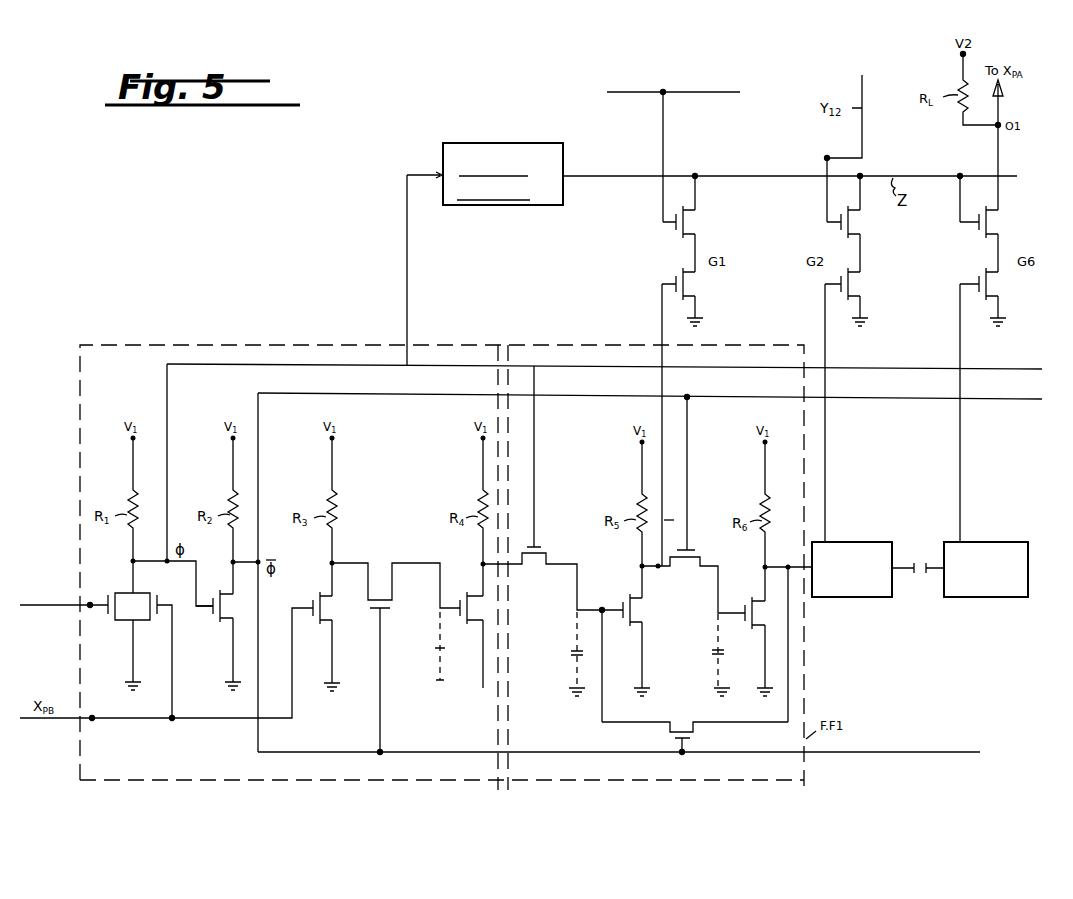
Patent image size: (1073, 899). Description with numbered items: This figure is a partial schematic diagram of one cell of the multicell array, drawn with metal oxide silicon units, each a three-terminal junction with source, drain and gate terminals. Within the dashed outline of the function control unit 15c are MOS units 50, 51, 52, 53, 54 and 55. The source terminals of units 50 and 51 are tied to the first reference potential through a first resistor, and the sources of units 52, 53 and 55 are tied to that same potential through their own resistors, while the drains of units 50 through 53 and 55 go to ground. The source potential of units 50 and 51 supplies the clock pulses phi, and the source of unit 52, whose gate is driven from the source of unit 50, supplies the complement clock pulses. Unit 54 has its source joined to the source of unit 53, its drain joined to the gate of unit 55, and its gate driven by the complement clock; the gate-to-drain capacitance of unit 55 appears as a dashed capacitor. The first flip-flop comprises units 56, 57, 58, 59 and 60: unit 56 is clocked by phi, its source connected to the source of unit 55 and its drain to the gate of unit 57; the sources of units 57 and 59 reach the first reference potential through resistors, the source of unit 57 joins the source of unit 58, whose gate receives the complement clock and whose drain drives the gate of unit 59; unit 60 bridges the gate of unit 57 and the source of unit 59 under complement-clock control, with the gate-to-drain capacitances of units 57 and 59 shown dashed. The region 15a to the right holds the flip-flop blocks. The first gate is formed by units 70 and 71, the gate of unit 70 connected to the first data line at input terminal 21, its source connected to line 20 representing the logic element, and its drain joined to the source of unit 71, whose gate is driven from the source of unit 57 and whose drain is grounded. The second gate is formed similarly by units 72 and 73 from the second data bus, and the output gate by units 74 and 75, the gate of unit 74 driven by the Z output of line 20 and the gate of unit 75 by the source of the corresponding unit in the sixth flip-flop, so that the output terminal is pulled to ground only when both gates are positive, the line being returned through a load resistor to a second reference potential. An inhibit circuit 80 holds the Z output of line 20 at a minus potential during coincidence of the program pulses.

The line 20 is at (746, 176).
The input terminal 21 is at (663, 92).
The MOS unit 50 is at (145, 608).
The MOS unit 51 is at (120, 610).
The MOS unit 52 is at (226, 611).
The MOS unit 53 is at (333, 612).
The MOS unit 54 is at (378, 580).
The MOS unit 55 is at (497, 612).
The MOS unit 56 is at (541, 560).
The MOS unit 57 is at (641, 615).
The MOS unit 58 is at (688, 562).
The MOS unit 59 is at (757, 631).
The MOS unit 60 is at (684, 719).
The MOS unit 70 is at (699, 229).
The MOS unit 71 is at (698, 292).
The MOS unit 72 is at (872, 229).
The MOS unit 73 is at (872, 291).
The MOS unit 74 is at (1010, 229).
The MOS unit 75 is at (1010, 291).
The inhibit circuit 80 is at (562, 143).
The flip-flop section 15a is at (883, 681).
The function control unit 15c is at (300, 343).